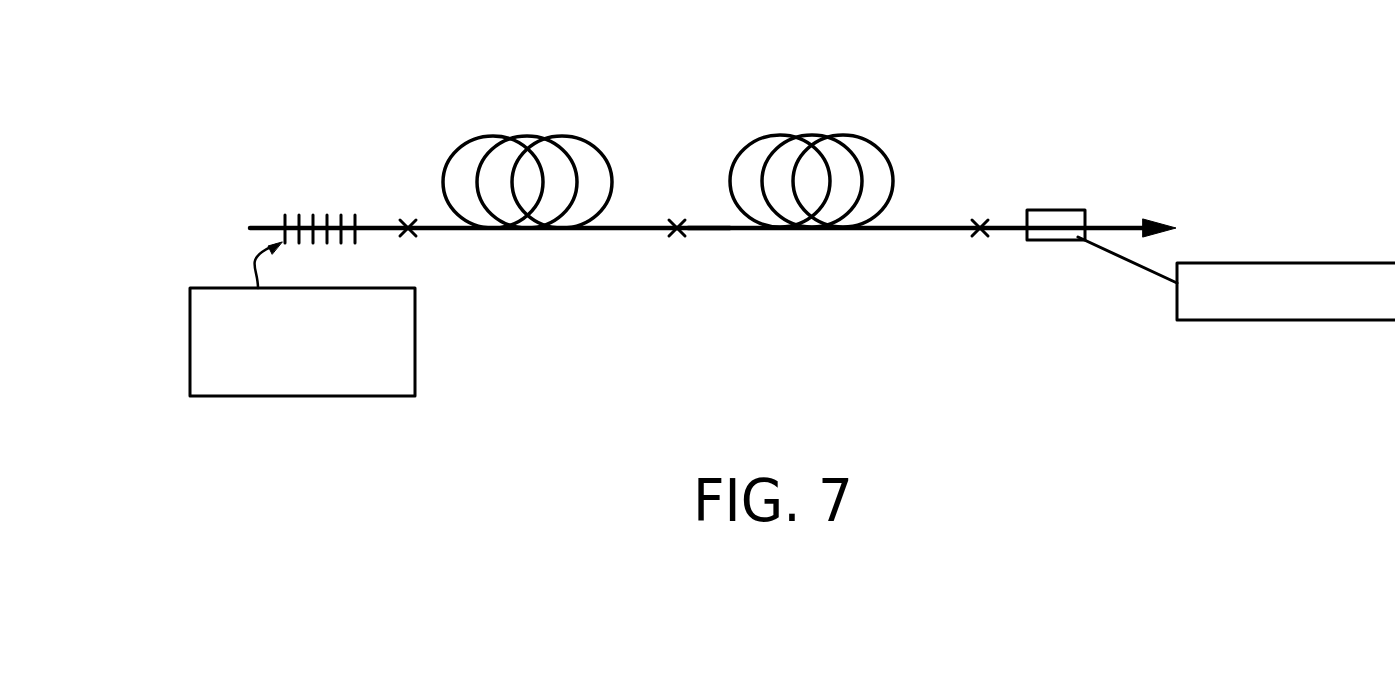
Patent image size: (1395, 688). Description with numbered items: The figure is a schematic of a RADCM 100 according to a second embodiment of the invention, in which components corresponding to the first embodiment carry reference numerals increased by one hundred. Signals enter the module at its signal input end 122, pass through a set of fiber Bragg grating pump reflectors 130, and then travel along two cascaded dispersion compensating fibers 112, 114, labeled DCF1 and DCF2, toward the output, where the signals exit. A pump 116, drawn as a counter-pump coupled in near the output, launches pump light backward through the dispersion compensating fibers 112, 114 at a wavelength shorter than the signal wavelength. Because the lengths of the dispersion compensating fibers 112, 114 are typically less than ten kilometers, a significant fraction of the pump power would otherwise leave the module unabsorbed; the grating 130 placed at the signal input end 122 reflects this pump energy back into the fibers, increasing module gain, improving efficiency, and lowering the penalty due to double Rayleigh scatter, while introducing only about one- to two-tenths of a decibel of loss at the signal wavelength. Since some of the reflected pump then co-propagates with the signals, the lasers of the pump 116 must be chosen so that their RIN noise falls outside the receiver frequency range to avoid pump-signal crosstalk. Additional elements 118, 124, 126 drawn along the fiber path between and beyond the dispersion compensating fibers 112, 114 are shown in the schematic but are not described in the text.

The RADCM 100 is at (718, 304).
The dispersion compensating fiber 112 is at (447, 165).
The dispersion compensating fiber 114 is at (888, 160).
The pump 116 is at (1173, 304).
The output isolator 118 is at (982, 236).
The signal input end 122 is at (412, 234).
The mid-stage isolator 124 is at (652, 232).
The interstage fiber section 126 is at (704, 231).
The fiber Bragg grating 130 is at (190, 353).